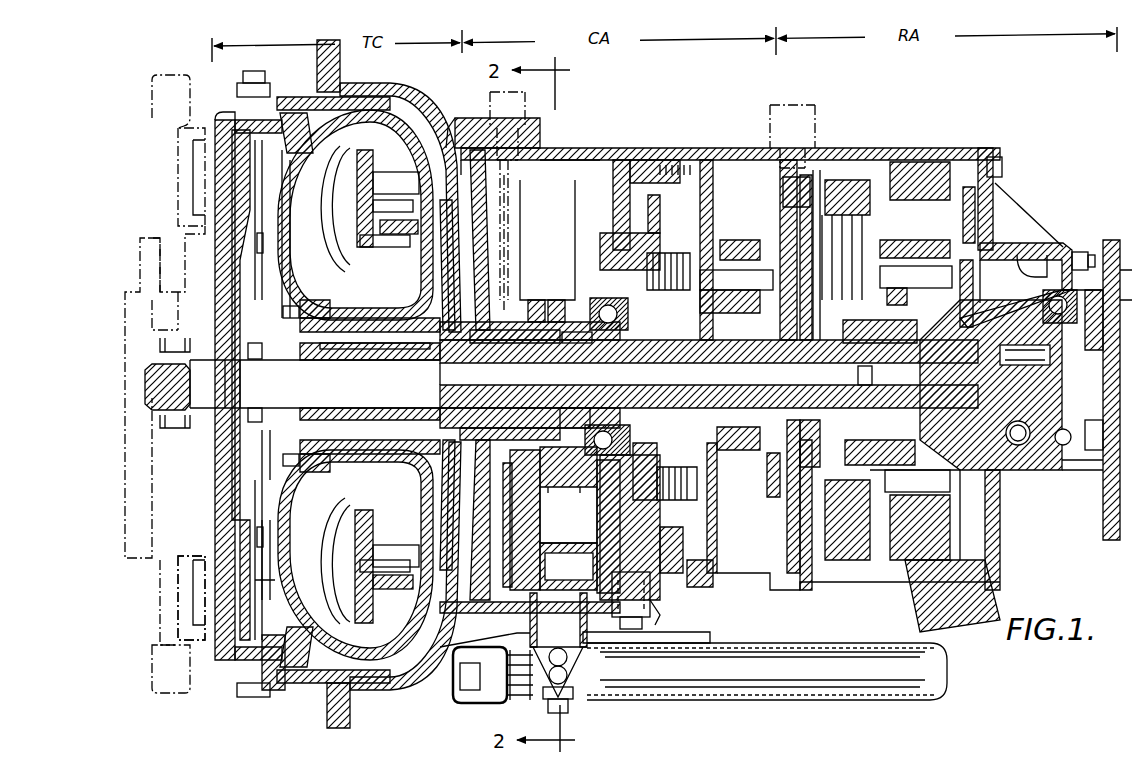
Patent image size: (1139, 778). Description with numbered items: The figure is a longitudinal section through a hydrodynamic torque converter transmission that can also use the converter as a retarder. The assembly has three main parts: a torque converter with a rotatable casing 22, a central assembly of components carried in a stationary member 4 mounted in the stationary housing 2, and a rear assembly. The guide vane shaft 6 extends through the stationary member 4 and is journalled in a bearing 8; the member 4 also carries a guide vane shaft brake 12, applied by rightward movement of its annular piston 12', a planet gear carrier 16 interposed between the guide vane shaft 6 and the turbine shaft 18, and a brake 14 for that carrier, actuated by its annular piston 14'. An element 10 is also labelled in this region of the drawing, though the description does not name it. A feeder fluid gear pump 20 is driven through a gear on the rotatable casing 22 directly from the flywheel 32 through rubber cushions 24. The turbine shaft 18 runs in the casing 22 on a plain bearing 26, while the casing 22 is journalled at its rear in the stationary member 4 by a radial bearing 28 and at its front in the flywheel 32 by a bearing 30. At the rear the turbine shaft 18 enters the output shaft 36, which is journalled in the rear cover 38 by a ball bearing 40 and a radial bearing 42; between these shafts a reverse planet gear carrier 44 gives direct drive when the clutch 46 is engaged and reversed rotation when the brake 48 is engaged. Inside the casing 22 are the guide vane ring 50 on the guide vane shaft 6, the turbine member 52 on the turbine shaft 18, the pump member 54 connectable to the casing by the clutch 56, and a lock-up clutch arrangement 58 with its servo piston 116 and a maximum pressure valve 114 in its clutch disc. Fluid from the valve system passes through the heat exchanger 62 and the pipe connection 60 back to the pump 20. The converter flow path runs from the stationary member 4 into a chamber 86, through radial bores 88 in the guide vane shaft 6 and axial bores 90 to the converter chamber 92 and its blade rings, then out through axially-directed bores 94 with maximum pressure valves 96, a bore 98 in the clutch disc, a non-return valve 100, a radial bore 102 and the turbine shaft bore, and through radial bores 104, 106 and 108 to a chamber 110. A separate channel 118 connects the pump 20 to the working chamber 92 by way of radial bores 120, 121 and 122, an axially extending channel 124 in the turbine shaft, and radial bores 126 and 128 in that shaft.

The stationary housing 2 is at (565, 148).
The stationary member 4 is at (666, 148).
The guide vane shaft 6 is at (450, 428).
The bearing 8 is at (628, 392).
The stator support 10 is at (428, 428).
The guide vane shaft brake 12 is at (792, 510).
The annular piston 12' is at (635, 245).
The brake 14 is at (589, 607).
The annular piston 14' is at (679, 614).
The planet gear carrier 16 is at (710, 235).
The turbine shaft 18 is at (494, 396).
The feeder fluid gear pump 20 is at (578, 533).
The rotatable casing 22 is at (215, 269).
The rubber cushions 24 is at (188, 580).
The plain bearing 26 is at (246, 408).
The radial bearing 28 is at (505, 255).
The bearing 30 is at (162, 350).
The flywheel 32 is at (158, 266).
The output shaft 36 is at (1034, 375).
The rear cover 38 is at (1030, 247).
The ball bearing 40 is at (1093, 310).
The radial bearing 42 is at (980, 317).
The planet gear carrier 44 is at (927, 287).
The clutch 46 is at (828, 215).
The brake 48 is at (905, 152).
The guide vane ring 50 is at (407, 578).
The turbine member 52 is at (405, 536).
The pump member 54 is at (330, 578).
The clutch 56 is at (325, 690).
The lock-up clutch arrangement 58 is at (268, 650).
The pipe connection 60 is at (568, 623).
The heat exchanger 62 is at (760, 676).
The chamber 86 is at (548, 298).
The radial bores 88 is at (512, 343).
The axially extending bores 90 is at (340, 175).
The converter chamber 92 is at (375, 308).
The axially-directed bores 94 is at (320, 318).
The maximum pressure valves 96 is at (286, 318).
The bore 98 is at (296, 470).
The non-return valve 100 is at (268, 478).
The radial bore 102 is at (268, 408).
The radial bore 104 is at (596, 408).
The radial bore 106 is at (583, 340).
The radial bore 108 is at (548, 428).
The chamber 110 is at (586, 501).
The maximum pressure valve 114 is at (258, 290).
The servo piston 116 is at (272, 548).
The channel 118 is at (558, 501).
The radial bore 120 is at (536, 300).
The radial bore 121 is at (558, 300).
The radial bore 122 is at (548, 343).
The axially extending channel 124 is at (476, 481).
The radial bore 126 is at (371, 363).
The radial bore 128 is at (258, 382).